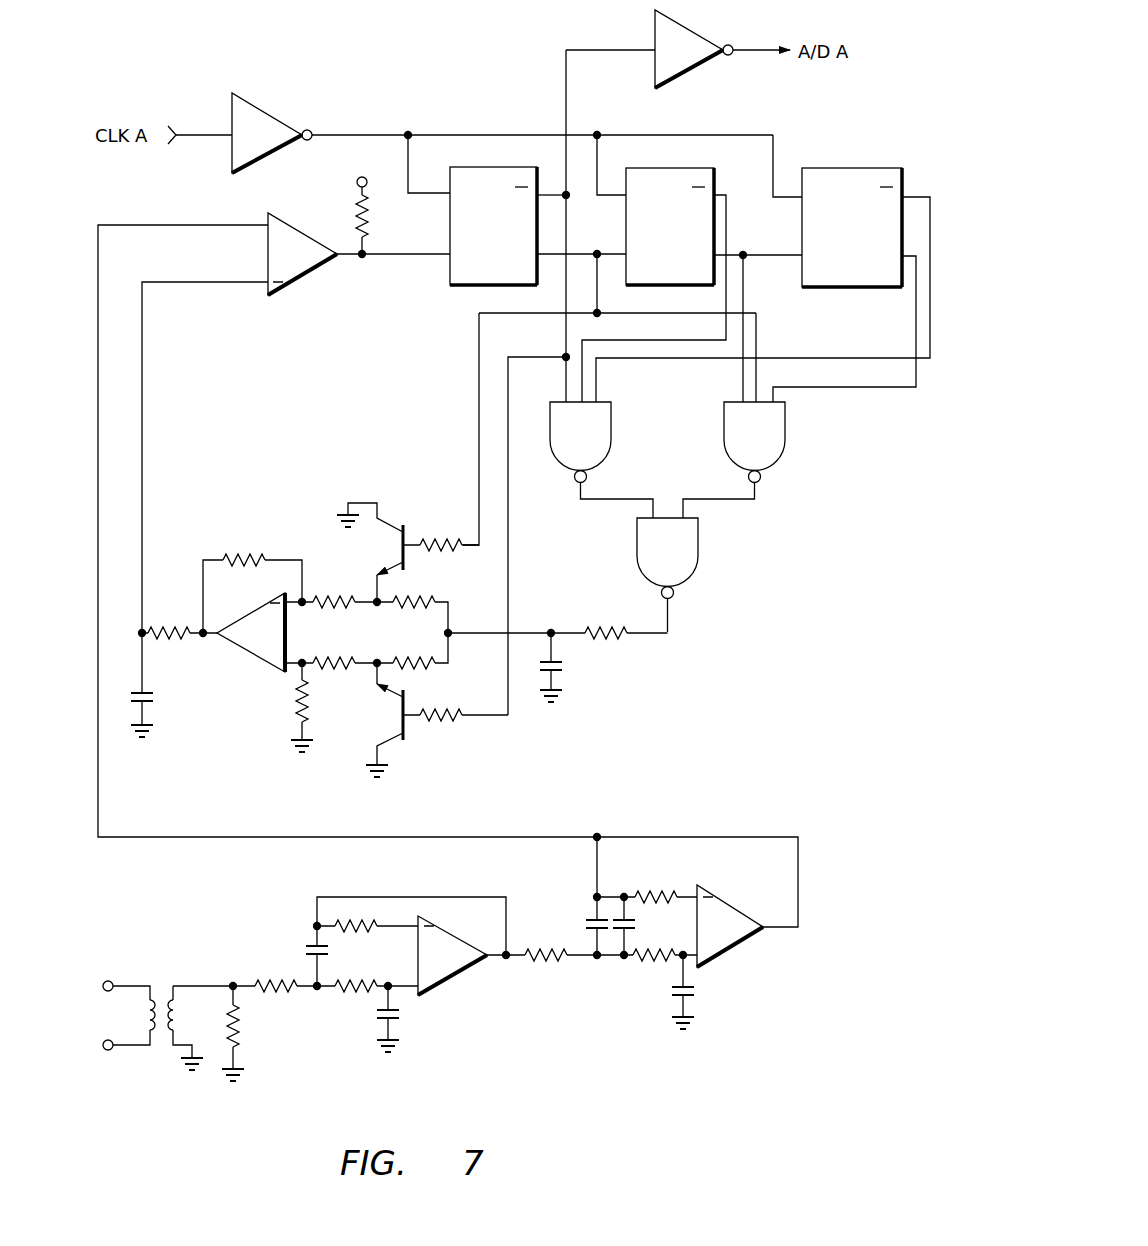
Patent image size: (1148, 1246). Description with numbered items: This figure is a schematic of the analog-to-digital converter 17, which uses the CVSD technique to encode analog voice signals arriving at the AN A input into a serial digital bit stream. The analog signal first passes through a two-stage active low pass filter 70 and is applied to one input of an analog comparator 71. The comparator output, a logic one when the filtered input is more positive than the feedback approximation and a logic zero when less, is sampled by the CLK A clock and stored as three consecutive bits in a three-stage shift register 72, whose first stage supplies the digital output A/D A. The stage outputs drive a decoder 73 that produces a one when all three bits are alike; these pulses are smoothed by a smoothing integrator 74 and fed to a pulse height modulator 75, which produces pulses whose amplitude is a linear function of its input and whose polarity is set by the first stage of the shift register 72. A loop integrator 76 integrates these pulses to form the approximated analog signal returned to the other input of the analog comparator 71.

The analog-to-digital converter 17 is at (750, 723).
The two-stage active low pass filter 70 is at (556, 976).
The analog comparator 71 is at (308, 262).
The three-stage shift register 72 is at (815, 142).
The decoder 73 is at (766, 532).
The smoothing integrator 74 is at (550, 618).
The pulse height modulator 75 is at (291, 679).
The loop integrator 76 is at (152, 621).